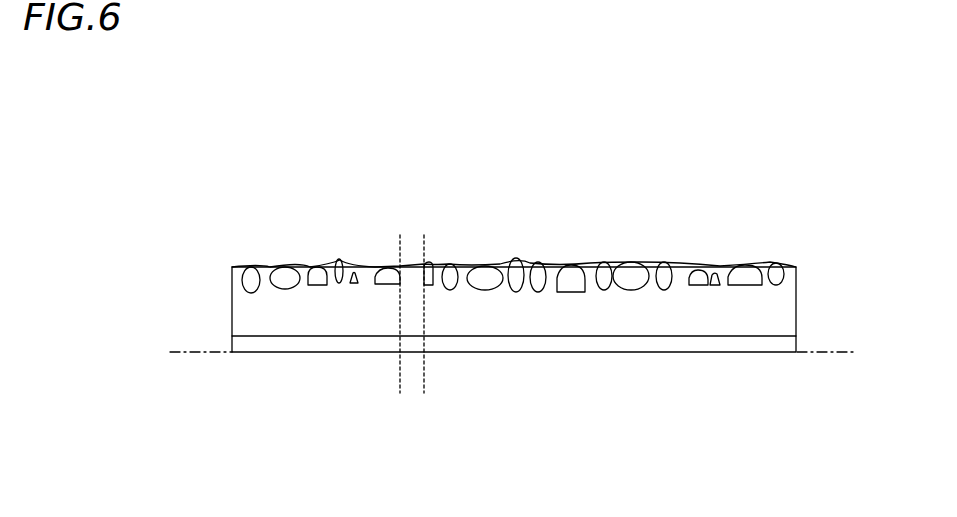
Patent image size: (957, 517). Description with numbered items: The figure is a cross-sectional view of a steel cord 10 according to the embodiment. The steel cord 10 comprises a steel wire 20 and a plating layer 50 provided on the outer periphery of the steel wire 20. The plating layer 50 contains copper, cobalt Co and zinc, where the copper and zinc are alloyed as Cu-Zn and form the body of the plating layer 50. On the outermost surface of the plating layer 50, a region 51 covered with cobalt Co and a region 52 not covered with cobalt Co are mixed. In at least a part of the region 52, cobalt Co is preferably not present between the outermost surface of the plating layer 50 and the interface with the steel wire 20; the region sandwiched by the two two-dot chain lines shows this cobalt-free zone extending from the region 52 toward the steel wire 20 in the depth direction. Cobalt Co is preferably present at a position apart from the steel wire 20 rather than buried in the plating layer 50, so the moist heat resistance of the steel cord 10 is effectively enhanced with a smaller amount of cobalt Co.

The steel cord 10 is at (768, 130).
The steel wire 20 is at (797, 345).
The plating layer 50 is at (220, 267).
The region covered with Co 51 is at (485, 267).
The region not covered with Co 52 is at (412, 268).
The cobalt Co is at (286, 268).
The alloyed copper and zinc Cu-Zn is at (327, 295).